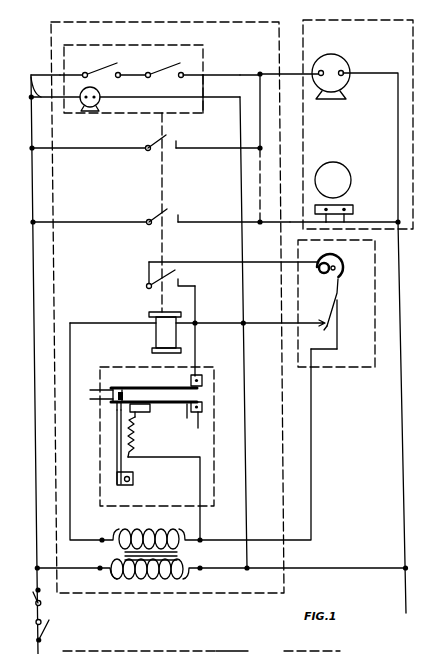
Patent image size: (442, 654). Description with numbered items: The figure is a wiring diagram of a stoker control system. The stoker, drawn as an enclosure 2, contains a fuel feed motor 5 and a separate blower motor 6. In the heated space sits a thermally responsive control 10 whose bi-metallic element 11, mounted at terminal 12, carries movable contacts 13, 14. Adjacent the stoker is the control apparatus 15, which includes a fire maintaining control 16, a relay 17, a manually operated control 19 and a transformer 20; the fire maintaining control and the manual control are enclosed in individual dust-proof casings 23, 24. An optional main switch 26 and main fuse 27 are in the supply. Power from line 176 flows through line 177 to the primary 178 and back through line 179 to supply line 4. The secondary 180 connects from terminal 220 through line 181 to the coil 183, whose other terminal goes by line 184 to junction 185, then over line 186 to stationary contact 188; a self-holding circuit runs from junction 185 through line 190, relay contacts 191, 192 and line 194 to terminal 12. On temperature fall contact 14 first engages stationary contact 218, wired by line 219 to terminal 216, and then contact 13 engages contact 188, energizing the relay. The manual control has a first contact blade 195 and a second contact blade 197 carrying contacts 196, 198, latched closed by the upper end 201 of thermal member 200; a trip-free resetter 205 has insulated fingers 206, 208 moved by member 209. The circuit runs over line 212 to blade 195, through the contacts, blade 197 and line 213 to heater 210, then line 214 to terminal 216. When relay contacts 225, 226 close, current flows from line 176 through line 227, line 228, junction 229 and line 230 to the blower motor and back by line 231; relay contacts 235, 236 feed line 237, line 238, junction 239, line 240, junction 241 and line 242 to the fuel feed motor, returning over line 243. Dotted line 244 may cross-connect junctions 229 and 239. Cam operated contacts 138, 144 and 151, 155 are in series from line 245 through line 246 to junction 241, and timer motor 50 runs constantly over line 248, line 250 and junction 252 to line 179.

The stoker enclosure 2 is at (419, 83).
The alternating current supply line 4 is at (404, 303).
The fuel feed motor 5 is at (341, 59).
The blower motor 6 is at (342, 167).
The thermally responsive control 10 is at (368, 368).
The thermally responsive element 11 is at (345, 282).
The terminal of thermally responsive element 12 is at (343, 263).
The movable contact 13 is at (324, 315).
The movable contact 14 is at (344, 341).
The control apparatus 15 is at (260, 600).
The fire maintaining control 16 is at (209, 56).
The relay 17 is at (141, 312).
The manually operated control 19 is at (220, 423).
The transformer 20 is at (158, 586).
The dust-proof casing 23 is at (203, 85).
The dust-proof casing 24 is at (216, 453).
The main circuit switch 26 is at (49, 628).
The main fuse 27 is at (33, 598).
The motor 50 is at (103, 103).
The contact 138 is at (119, 78).
The contact 144 is at (118, 62).
The switch contact 151 is at (180, 62).
The switch contact 155 is at (181, 78).
The line 176 is at (30, 125).
The line 177 is at (60, 568).
The primary 178 is at (128, 579).
The line 179 is at (232, 567).
The secondary 180 is at (143, 529).
The line 181 is at (71, 512).
The coil 183 is at (155, 339).
The line 184 is at (187, 334).
The junction 185 is at (198, 322).
The line 186 is at (206, 326).
The contact 188 is at (313, 335).
The line 190 is at (197, 293).
The relay contact 191 is at (184, 283).
The relay contact 192 is at (170, 273).
The line 194 is at (217, 262).
The first contact blade 195 is at (167, 386).
The contact 196 is at (92, 390).
The second contact blade 197 is at (182, 416).
The contact 198 is at (92, 400).
The thermal member 200 is at (116, 446).
The upper end 201 is at (116, 406).
The trip-free resetter 205 is at (142, 414).
The insulated finger 206 is at (129, 392).
The insulated finger 208 is at (152, 413).
The member 209 is at (131, 426).
The heater 210 is at (129, 460).
The line 212 is at (197, 351).
The line 213 is at (199, 430).
The line 214 is at (180, 458).
The terminal 216 is at (201, 538).
The stationary contact 218 is at (324, 356).
The line 219 is at (313, 433).
The terminal 220 is at (101, 539).
The relay contact 225 is at (183, 214).
The relay contact 226 is at (168, 208).
The line 227 is at (84, 222).
The line 228 is at (200, 224).
The junction 229 is at (269, 234).
The line 230 is at (287, 220).
The line 231 is at (369, 220).
The relay contact 235 is at (182, 140).
The relay contact 236 is at (164, 135).
The line 237 is at (80, 148).
The line 238 is at (214, 148).
The junction 239 is at (262, 142).
The line 240 is at (262, 110).
The junction 241 is at (252, 73).
The line 242 is at (283, 73).
The line 243 is at (371, 73).
The dotted line 244 is at (258, 176).
The line 245 is at (44, 62).
The line 246 is at (229, 74).
The line 248 is at (30, 80).
The line 250 is at (240, 112).
The junction 252 is at (249, 566).